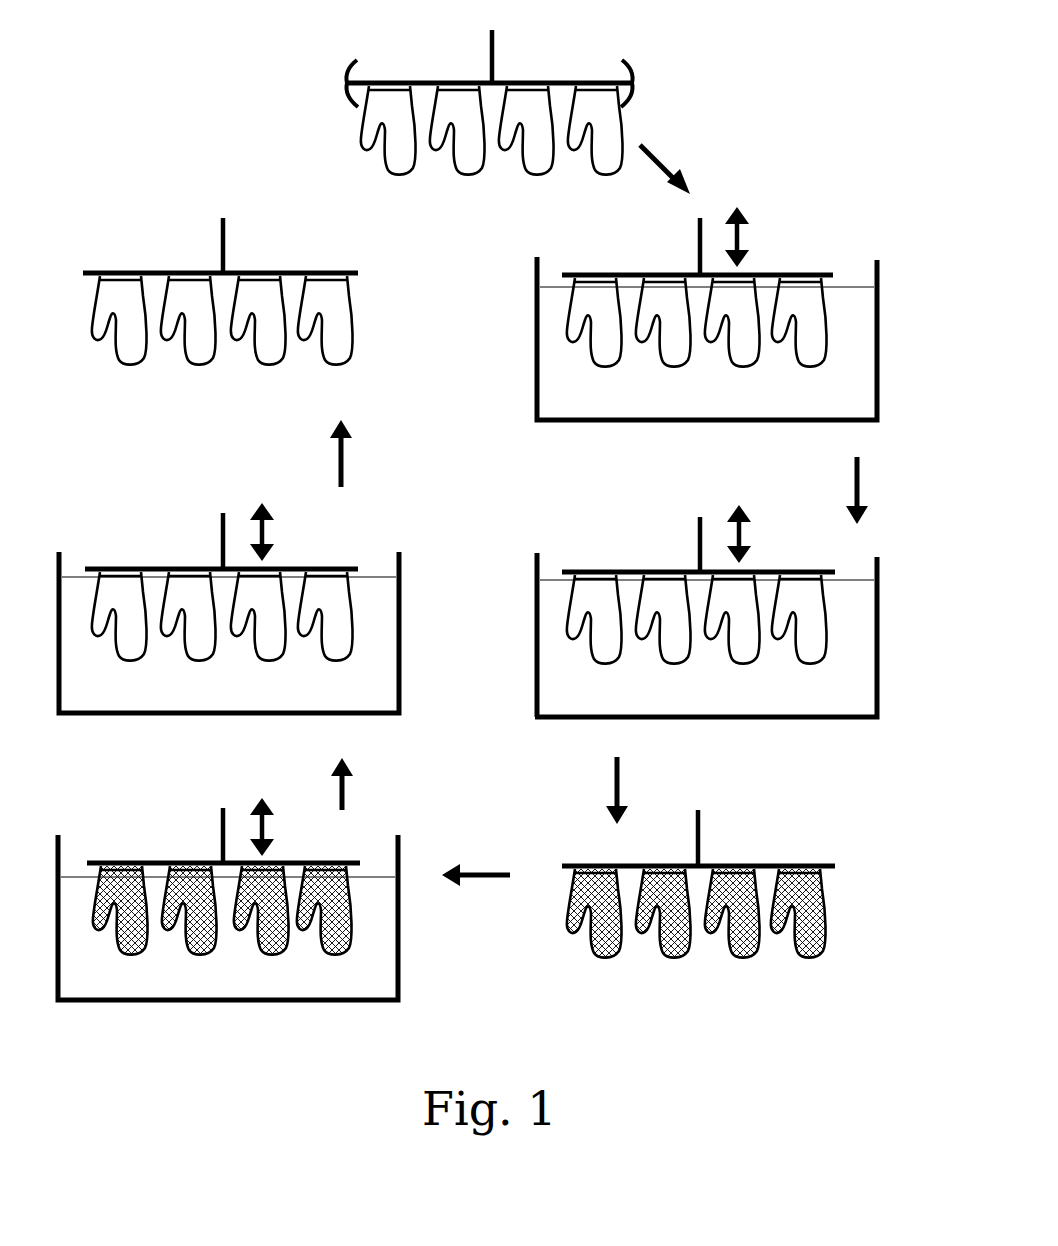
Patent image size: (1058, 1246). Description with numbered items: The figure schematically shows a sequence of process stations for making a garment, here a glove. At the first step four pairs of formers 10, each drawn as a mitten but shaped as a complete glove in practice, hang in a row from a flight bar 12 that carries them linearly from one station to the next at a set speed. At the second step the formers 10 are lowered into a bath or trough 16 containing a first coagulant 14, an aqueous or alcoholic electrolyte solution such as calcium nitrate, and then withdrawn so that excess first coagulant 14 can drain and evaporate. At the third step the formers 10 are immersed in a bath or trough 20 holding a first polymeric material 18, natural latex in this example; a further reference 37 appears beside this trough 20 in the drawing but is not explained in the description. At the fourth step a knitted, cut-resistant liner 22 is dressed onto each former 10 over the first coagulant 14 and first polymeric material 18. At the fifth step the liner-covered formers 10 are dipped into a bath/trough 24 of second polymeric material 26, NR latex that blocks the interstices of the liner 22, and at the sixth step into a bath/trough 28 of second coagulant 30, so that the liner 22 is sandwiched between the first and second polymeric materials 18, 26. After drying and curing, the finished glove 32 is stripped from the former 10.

The former 10 is at (613, 128).
The flight bar 12 is at (497, 66).
The first coagulant 14 is at (742, 407).
The bath or trough 16 is at (880, 262).
The first polymeric material 18 is at (735, 703).
The bath or trough 20 is at (741, 607).
The knitted liner 22 is at (818, 893).
The bath/trough 24 is at (63, 840).
The second polymeric material 26 is at (155, 985).
The bath/trough 28 is at (63, 555).
The second coagulant 30 is at (147, 703).
The glove 32 is at (327, 298).
The latex layer 37 is at (540, 555).